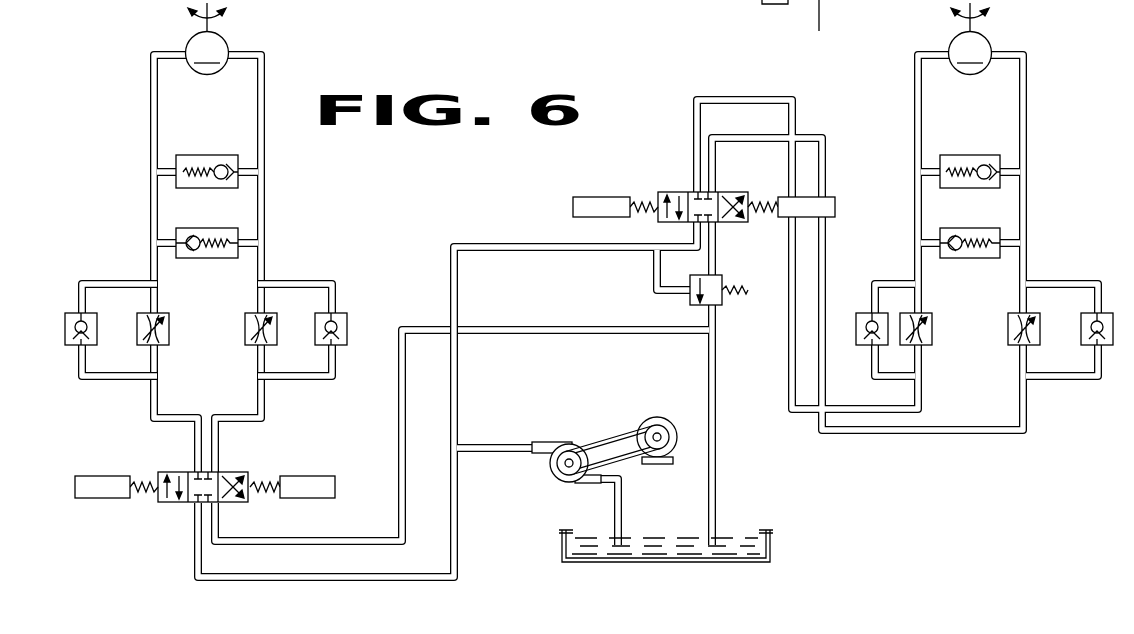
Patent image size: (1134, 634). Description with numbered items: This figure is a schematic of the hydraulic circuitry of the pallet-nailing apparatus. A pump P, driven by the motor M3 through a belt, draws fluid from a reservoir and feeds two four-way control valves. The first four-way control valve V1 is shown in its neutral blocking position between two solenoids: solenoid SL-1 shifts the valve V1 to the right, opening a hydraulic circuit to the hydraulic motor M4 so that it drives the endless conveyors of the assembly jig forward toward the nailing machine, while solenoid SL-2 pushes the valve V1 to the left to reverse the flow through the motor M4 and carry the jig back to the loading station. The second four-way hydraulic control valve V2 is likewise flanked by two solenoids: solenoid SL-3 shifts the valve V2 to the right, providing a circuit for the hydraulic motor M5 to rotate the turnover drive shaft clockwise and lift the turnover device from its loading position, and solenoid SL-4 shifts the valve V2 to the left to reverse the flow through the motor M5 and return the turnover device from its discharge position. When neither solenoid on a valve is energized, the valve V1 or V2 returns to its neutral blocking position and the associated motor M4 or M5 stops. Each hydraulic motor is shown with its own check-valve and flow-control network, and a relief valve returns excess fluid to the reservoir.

The hydraulic motor M4 is at (207, 39).
The hydraulic motor M5 is at (970, 39).
The motor M3 is at (655, 416).
The pump P is at (573, 445).
The four-way control valve V1 is at (228, 466).
The four-way hydraulic control valve V2 is at (682, 192).
The solenoid SL-1 is at (94, 479).
The solenoid SL-2 is at (332, 465).
The solenoid SL-3 is at (594, 200).
The solenoid SL-4 is at (811, 200).